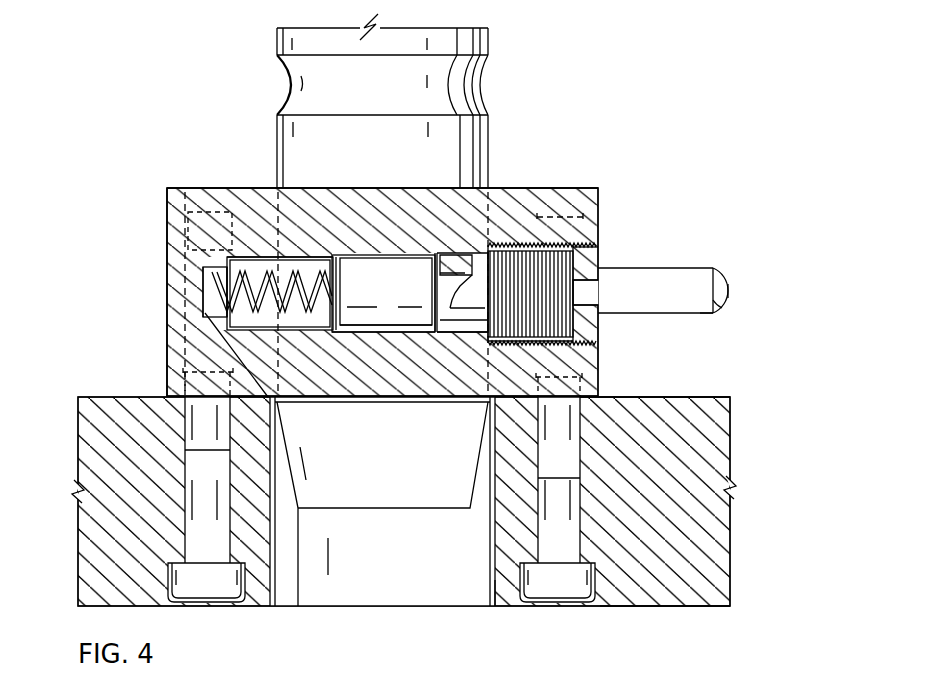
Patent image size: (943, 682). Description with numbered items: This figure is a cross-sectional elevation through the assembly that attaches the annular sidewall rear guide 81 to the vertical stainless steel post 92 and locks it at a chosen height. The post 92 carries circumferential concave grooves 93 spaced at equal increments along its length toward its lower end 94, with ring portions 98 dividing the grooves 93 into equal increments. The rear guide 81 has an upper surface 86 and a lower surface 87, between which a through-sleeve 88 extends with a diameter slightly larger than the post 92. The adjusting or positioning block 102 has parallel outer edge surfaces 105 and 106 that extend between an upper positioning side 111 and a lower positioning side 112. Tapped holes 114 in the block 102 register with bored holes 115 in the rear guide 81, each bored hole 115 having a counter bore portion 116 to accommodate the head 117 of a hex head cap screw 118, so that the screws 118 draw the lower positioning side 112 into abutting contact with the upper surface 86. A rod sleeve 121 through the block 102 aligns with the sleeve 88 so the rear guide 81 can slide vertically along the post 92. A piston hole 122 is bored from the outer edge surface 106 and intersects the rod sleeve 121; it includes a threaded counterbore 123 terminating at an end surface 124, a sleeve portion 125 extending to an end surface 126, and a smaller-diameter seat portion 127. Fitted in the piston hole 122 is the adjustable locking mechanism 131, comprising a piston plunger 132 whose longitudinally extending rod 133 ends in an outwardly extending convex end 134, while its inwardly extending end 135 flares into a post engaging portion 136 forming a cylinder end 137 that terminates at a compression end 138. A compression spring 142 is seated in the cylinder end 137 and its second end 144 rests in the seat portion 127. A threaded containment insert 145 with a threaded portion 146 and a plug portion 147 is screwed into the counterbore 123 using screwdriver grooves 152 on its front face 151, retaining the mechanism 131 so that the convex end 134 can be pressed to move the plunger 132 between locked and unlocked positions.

The annular sidewall rear guide 81 is at (735, 527).
The upper surface 86 is at (682, 397).
The lower surface 87 is at (665, 606).
The through-sleeve 88 is at (495, 580).
The vertical stainless steel post 92 is at (276, 43).
The circumferential concave groove 93 is at (478, 88).
The lower end 94 is at (412, 510).
The ring portion 98 is at (277, 138).
The adjusting or positioning block 102 is at (604, 210).
The outer edge surface 105 is at (167, 250).
The outer edge surface 106 is at (600, 196).
The upper positioning side 111 is at (500, 190).
The lower positioning side 112 is at (592, 402).
The tapped hole 114 is at (598, 186).
The bored hole 115 is at (228, 453).
The counter bore portion 116 is at (170, 585).
The head 117 is at (170, 573).
The hex head cap screw 118 is at (185, 526).
The rod sleeve 121 is at (268, 192).
The piston hole 122 is at (262, 253).
The threaded counterbore 123 is at (585, 310).
The end surface 124 is at (505, 342).
The sleeve portion 125 is at (336, 333).
The end surface 126 is at (275, 400).
The seat portion 127 is at (222, 314).
The adjustable locking mechanism 131 is at (723, 263).
The piston plunger 132 is at (702, 322).
The longitudinally extending rod 133 is at (718, 308).
The outwardly extending convex end 134 is at (730, 292).
The inwardly extending end 135 is at (440, 252).
The post engaging portion 136 is at (370, 255).
The cylinder end 137 is at (413, 318).
The compression end 138 is at (330, 250).
The compression spring 142 is at (236, 228).
The second end 144 is at (210, 287).
The threaded containment insert 145 is at (551, 246).
The threaded portion 146 is at (522, 247).
The plug portion 147 is at (456, 330).
The front face 151 is at (598, 258).
The screwdriver groove 152 is at (577, 293).